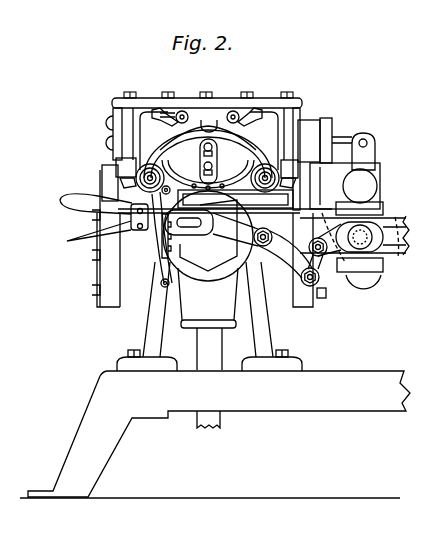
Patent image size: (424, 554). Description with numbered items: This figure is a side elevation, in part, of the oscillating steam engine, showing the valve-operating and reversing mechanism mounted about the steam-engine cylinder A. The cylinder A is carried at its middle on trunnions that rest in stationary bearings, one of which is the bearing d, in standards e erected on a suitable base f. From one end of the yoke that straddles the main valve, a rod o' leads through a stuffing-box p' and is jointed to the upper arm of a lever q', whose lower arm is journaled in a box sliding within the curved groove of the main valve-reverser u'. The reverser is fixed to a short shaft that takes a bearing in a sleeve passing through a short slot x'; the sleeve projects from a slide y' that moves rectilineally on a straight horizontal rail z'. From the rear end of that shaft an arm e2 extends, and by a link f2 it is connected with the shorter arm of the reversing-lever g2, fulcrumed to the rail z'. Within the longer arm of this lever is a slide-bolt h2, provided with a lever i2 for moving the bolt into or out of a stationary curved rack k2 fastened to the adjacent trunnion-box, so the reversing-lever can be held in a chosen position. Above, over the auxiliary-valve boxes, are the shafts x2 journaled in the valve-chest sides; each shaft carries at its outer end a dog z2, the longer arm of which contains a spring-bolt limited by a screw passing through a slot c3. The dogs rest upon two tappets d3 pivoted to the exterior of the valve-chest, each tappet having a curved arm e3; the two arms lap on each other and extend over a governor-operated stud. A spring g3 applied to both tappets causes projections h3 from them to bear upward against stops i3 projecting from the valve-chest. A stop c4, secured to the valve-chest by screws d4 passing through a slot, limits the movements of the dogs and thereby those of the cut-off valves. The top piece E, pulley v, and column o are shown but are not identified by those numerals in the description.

The top cross bar E is at (207, 94).
The shaft x2 is at (182, 110).
The dog z2 is at (207, 117).
The stop c4 is at (209, 118).
The slot c3 is at (208, 154).
The curved arm e3 is at (208, 138).
The spring g3 is at (208, 175).
The screws d4 is at (222, 164).
The tappet d3 is at (207, 168).
The stop i3 is at (207, 168).
The projection h3 is at (208, 189).
The bearing d is at (208, 236).
The slide-bolt h2 is at (167, 236).
The stationary curved rack k2 is at (111, 213).
The lever i2 is at (100, 231).
The reversing-lever g2 is at (218, 228).
The link f2 is at (288, 253).
The arm e2 is at (345, 245).
The pulley v is at (360, 237).
The slide y' is at (359, 237).
The rail z' is at (354, 235).
The slot x' is at (354, 262).
The main valve-reverser u' is at (362, 229).
The stuffing-box p' is at (339, 163).
The rod o' is at (342, 134).
The lever q' is at (363, 151).
The steam-engine cylinder A is at (137, 287).
The standard e is at (208, 309).
The column o is at (209, 349).
The base f is at (215, 434).